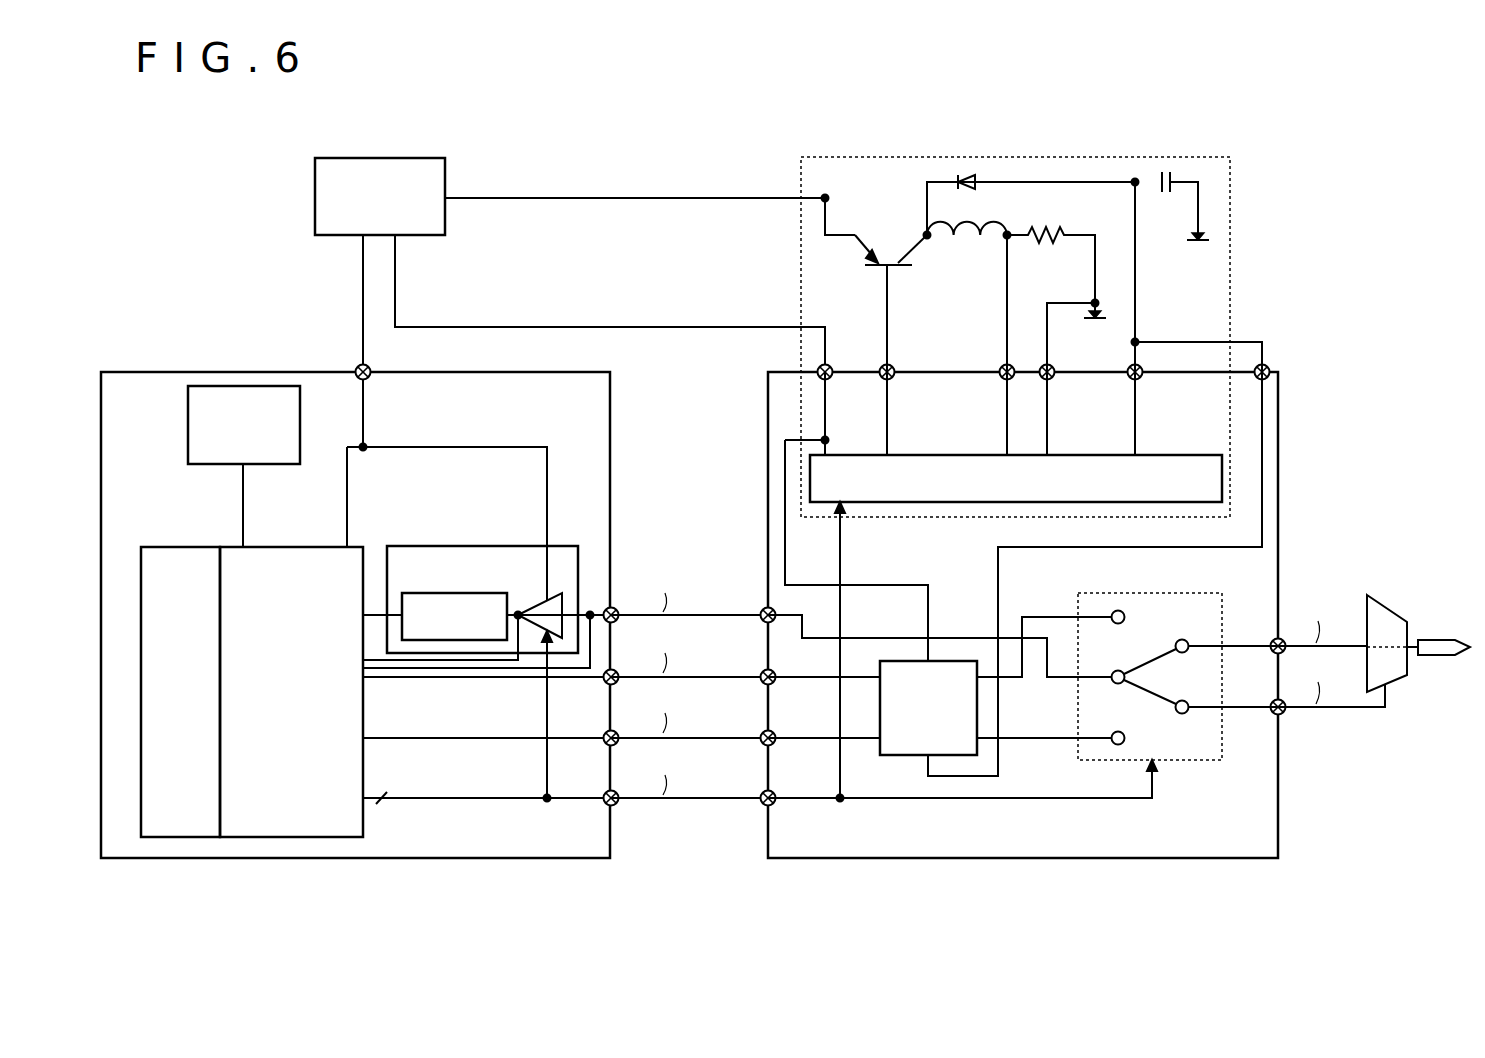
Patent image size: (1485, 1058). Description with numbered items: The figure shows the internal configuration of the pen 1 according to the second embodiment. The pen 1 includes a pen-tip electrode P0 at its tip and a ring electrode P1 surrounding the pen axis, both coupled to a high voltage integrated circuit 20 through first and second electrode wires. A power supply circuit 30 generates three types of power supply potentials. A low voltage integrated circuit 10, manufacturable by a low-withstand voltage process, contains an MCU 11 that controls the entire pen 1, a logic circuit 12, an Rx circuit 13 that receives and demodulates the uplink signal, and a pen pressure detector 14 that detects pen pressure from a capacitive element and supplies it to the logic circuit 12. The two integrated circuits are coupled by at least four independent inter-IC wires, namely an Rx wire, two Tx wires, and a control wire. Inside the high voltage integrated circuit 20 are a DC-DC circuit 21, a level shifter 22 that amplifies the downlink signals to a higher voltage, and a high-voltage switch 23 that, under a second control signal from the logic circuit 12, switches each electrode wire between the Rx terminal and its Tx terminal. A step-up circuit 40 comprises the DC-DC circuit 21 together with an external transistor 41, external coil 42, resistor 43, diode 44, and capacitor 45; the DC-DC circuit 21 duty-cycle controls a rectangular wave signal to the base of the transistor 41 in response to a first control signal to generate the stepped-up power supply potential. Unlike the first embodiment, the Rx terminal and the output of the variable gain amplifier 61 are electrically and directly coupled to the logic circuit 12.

The pen 1 is at (706, 126).
The low voltage integrated circuit 10 is at (357, 858).
The microcontroller unit 11 is at (179, 545).
The logic circuit 12 is at (288, 545).
The Rx circuit 13 is at (481, 545).
The pen pressure detector 14 is at (188, 425).
The high voltage integrated circuit 20 is at (1022, 858).
The DC-DC circuit 21 is at (972, 452).
The level shifter 22 is at (903, 757).
The high-voltage switch 23 is at (1222, 762).
The power supply circuit 30 is at (313, 195).
The step-up circuit 40 is at (1232, 230).
The transistor 41 is at (885, 262).
The external coil 42 is at (967, 240).
The resistor 43 is at (1060, 231).
The diode 44 is at (975, 188).
The capacitor 45 is at (1162, 188).
The variable gain amplifier 61 is at (560, 594).
The pen-tip electrode P0 is at (1440, 662).
The ring electrode P1 is at (1387, 600).